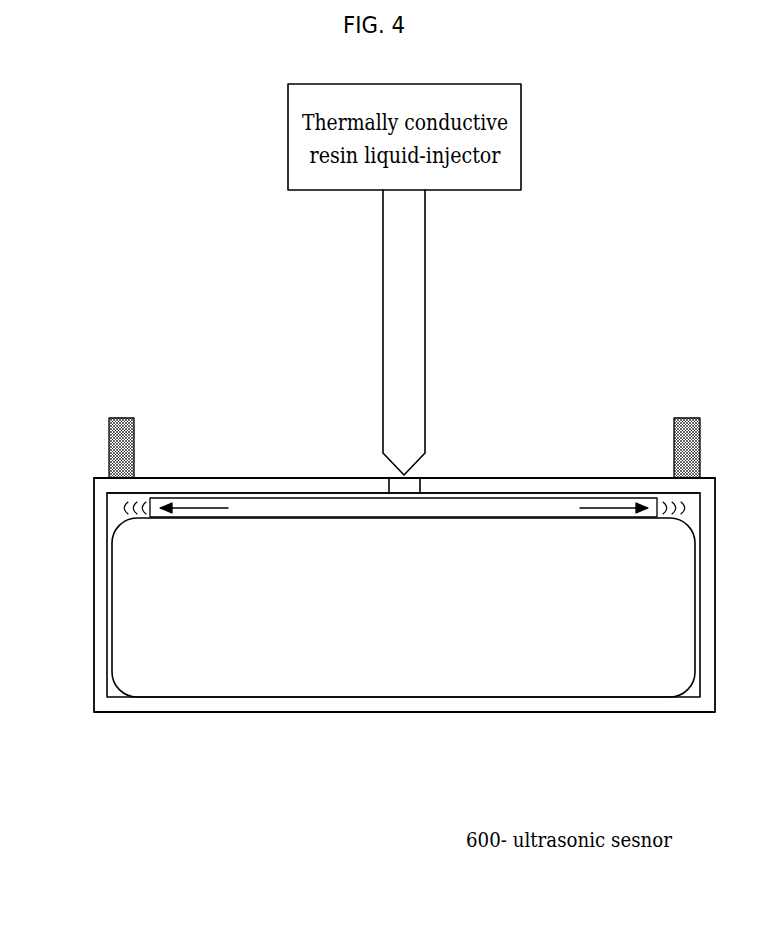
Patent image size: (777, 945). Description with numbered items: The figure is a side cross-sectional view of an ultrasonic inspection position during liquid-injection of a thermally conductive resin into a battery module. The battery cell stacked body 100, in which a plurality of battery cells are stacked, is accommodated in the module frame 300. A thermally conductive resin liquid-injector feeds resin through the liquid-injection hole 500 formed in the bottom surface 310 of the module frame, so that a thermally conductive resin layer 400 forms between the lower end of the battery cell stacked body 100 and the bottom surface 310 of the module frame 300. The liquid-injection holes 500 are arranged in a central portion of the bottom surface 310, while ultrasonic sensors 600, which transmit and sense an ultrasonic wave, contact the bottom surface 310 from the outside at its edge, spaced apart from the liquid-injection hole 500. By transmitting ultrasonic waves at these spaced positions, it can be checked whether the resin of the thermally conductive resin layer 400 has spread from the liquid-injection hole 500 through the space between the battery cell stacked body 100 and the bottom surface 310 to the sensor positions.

The battery cell stacked body 100 is at (287, 663).
The module frame 300 is at (101, 672).
The bottom surface of the module frame 310 is at (495, 487).
The thermally conductive resin layer 400 is at (435, 510).
The liquid-injection hole 500 is at (396, 488).
The ultrasonic sensor 600 is at (120, 418).